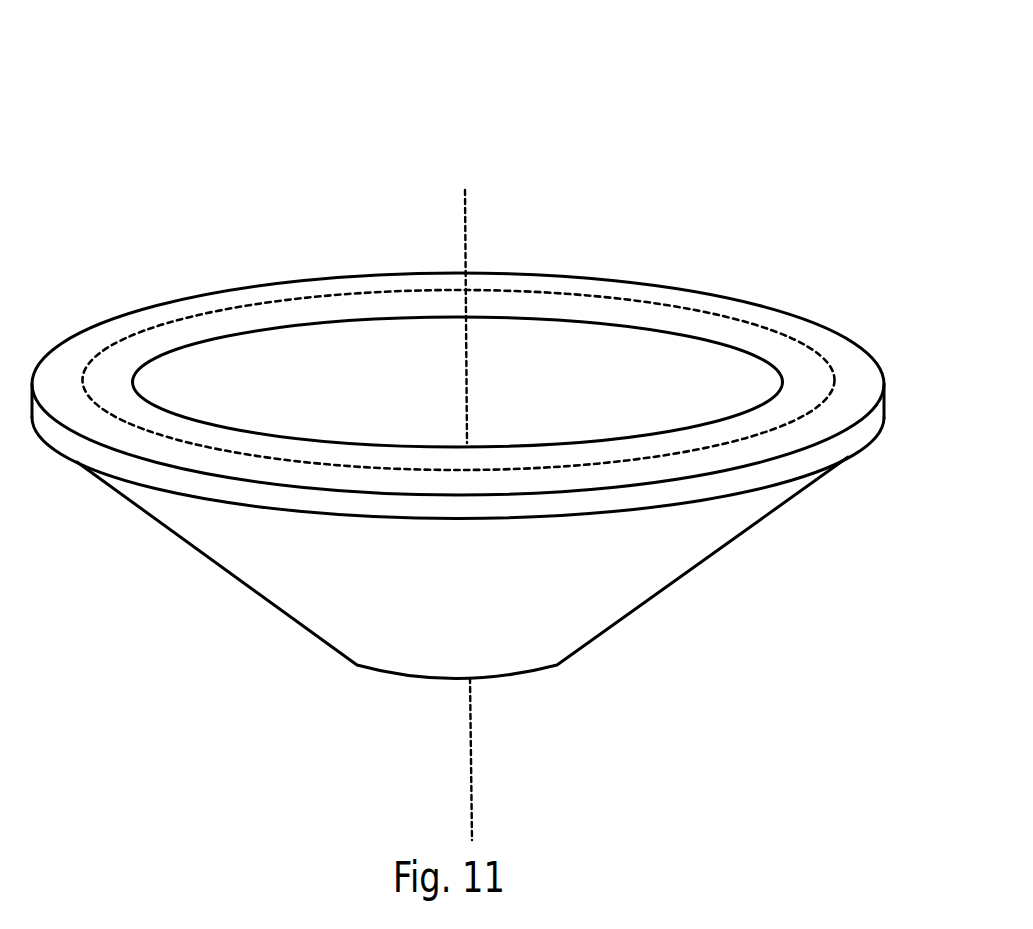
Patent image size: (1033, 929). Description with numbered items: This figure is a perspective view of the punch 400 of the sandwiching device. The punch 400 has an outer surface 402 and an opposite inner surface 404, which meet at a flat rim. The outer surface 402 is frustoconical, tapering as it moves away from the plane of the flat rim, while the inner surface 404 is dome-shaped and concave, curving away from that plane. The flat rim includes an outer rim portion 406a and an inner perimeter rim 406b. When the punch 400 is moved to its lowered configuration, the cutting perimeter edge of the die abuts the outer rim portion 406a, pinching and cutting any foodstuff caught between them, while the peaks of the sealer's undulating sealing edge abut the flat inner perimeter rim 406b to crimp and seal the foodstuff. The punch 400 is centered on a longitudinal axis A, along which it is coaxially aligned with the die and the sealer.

The punch 400 is at (250, 108).
The outer surface 402 is at (567, 608).
The inner surface 404 is at (368, 374).
The outer rim portion 406a is at (865, 367).
The inner perimeter rim 406b is at (765, 345).
The longitudinal axis A is at (466, 232).